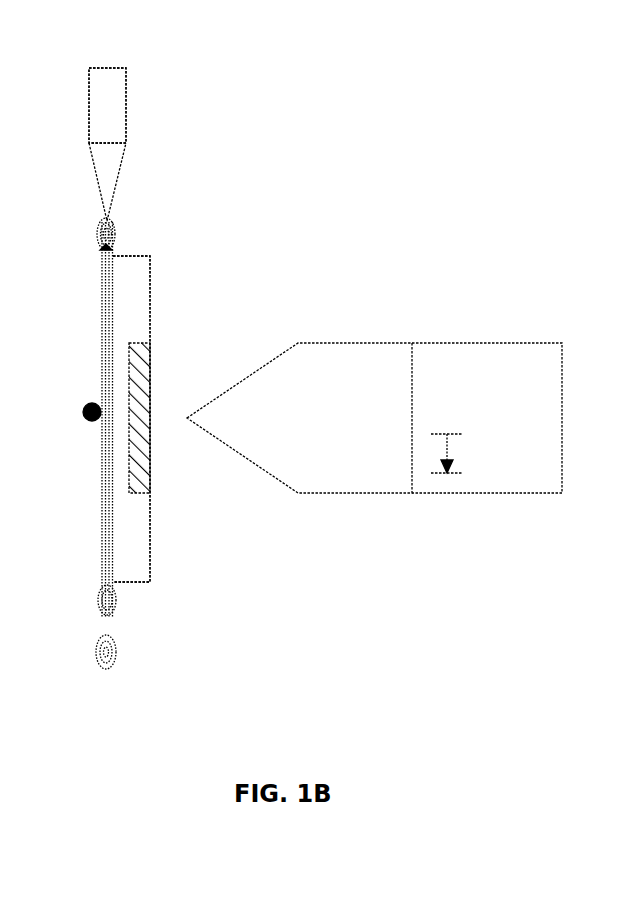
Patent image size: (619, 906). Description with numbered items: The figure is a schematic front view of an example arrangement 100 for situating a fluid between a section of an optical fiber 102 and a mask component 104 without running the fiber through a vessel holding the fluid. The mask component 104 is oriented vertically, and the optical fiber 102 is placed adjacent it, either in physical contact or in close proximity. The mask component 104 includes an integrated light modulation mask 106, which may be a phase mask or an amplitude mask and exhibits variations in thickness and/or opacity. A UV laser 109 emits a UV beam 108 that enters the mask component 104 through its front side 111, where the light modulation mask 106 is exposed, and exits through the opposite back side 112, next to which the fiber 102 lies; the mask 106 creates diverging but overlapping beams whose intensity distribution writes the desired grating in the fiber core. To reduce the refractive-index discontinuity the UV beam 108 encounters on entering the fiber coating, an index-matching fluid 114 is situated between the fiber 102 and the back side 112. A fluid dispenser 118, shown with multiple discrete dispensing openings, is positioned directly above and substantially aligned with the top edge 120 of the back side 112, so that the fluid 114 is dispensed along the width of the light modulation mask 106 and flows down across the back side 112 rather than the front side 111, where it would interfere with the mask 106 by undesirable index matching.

The arrangement 100 is at (492, 49).
The fluid dispenser 118 is at (97, 68).
The top edge 120 is at (101, 237).
The index-matching fluid 114 is at (102, 333).
The optical fiber 102 is at (85, 405).
The mask component 104 is at (133, 256).
The light modulation mask 106 is at (148, 372).
The back side 112 is at (109, 538).
The front side 111 is at (156, 538).
The UV beam 108 is at (323, 350).
The UV laser 109 is at (492, 345).